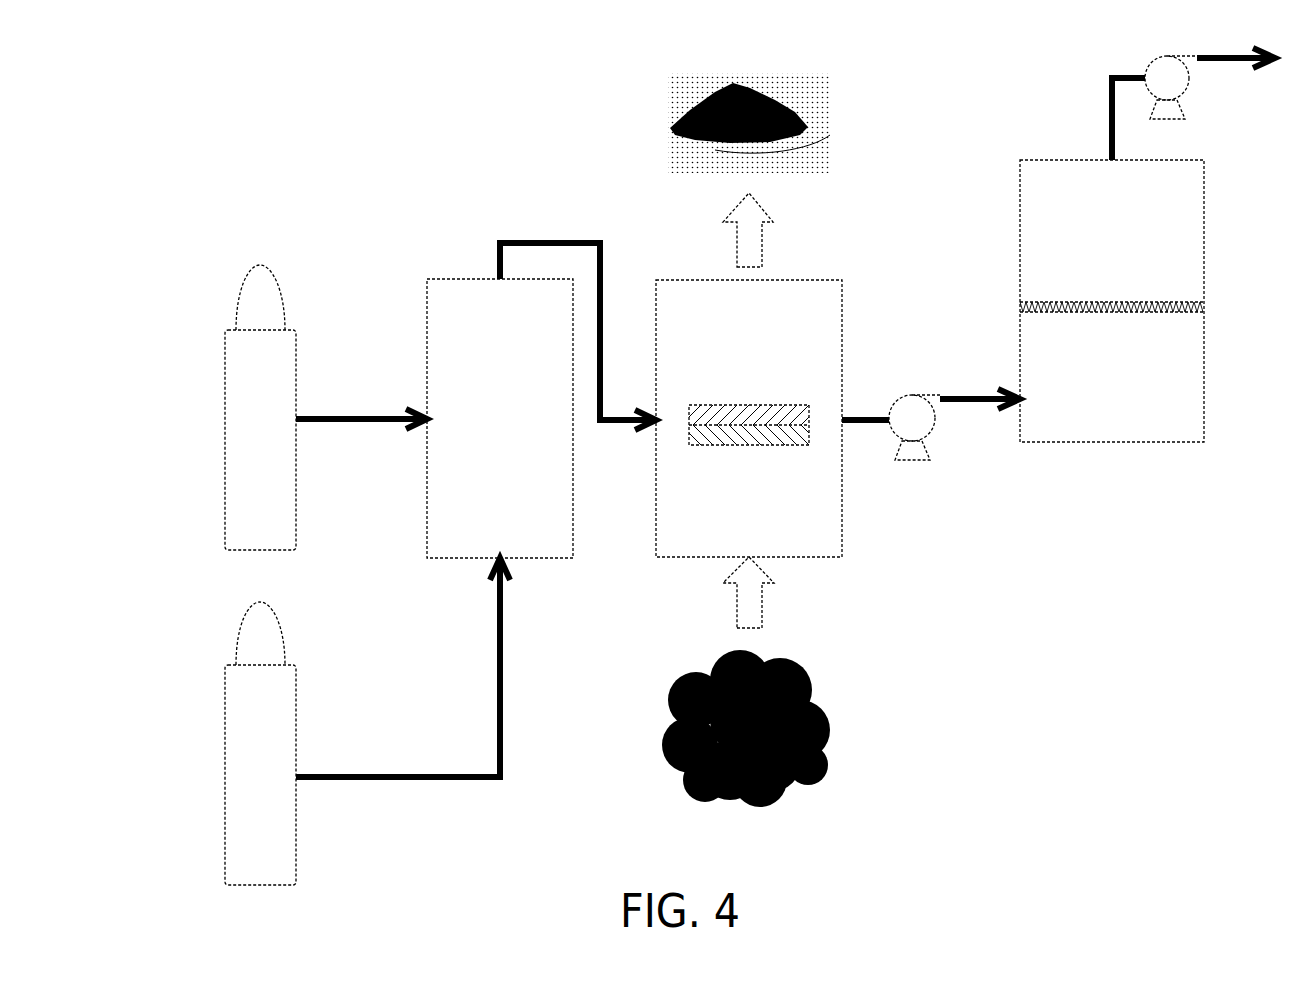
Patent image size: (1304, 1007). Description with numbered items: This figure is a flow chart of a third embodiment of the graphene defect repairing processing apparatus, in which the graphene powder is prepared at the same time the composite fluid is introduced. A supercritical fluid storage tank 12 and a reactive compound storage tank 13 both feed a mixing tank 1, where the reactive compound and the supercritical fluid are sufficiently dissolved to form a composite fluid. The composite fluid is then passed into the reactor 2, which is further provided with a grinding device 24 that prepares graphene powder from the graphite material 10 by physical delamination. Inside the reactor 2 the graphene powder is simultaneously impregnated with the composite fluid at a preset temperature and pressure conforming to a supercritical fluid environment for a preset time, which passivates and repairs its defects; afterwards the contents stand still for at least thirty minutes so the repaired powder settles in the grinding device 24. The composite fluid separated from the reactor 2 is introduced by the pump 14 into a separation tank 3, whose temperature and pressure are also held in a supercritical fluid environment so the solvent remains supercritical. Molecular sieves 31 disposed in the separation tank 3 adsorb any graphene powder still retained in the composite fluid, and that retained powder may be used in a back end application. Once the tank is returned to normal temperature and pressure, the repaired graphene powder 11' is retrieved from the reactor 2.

The mixing tank 1 is at (492, 318).
The reactor 2 is at (744, 318).
The separation tank 3 is at (1104, 198).
The graphite material 10 is at (785, 655).
The repaired graphene powder 11' is at (713, 122).
The supercritical fluid storage tank 12 is at (257, 286).
The reactive compound storage tank 13 is at (255, 632).
The pump 14 is at (912, 396).
The grinding device 24 is at (810, 435).
The molecular sieves 31 is at (1204, 307).